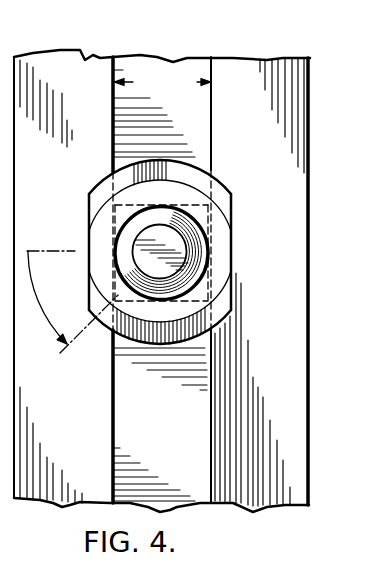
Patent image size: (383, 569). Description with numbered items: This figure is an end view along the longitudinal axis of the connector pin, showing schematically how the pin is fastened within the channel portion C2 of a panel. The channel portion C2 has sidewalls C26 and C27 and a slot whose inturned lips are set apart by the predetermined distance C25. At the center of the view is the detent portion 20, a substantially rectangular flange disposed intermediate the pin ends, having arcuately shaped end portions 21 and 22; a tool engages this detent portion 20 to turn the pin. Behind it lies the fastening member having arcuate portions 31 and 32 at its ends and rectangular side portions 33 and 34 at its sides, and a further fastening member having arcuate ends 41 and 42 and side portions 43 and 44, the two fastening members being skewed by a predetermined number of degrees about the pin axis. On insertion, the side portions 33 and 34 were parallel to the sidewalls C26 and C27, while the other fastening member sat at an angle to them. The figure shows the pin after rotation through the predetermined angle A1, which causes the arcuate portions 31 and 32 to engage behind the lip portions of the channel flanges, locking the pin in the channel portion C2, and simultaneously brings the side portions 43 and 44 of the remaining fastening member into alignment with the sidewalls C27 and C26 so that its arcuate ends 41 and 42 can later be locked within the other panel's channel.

The detent portion 20 is at (232, 228).
The end portion 21 is at (196, 177).
The end portion 22 is at (188, 341).
The arcuate portion 31 is at (106, 207).
The arcuate portion 32 is at (232, 304).
The side portion 33 is at (214, 237).
The side portion 34 is at (102, 257).
The arcuate end 41 is at (205, 188).
The arcuate end 42 is at (157, 312).
The side portion 43 is at (216, 285).
The side portion 44 is at (100, 328).
The predetermined angle A1 is at (69, 302).
The channel portion C2 is at (308, 58).
The predetermined distance C25 is at (162, 83).
The sidewall C26 is at (218, 410).
The sidewall C27 is at (112, 421).